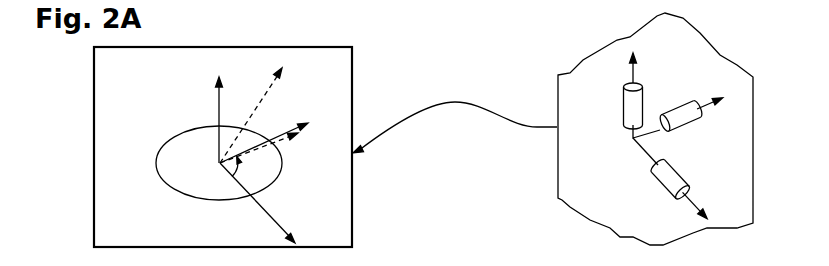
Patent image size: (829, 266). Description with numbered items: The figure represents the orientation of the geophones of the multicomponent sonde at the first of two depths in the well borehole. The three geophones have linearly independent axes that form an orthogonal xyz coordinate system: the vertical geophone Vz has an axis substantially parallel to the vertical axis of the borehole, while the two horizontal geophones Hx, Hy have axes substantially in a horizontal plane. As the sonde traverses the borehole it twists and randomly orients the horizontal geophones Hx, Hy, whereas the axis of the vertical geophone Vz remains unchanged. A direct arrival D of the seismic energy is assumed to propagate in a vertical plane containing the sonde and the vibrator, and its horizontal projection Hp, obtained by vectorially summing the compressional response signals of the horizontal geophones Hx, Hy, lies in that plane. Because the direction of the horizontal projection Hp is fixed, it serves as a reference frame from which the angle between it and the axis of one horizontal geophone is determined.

The vertical geophone Vz is at (428, 108).
The direct arrival D is at (259, 106).
The horizontal geophone Hy is at (467, 160).
The horizontal projection Hp is at (322, 131).
The horizontal geophone Hx is at (473, 170).